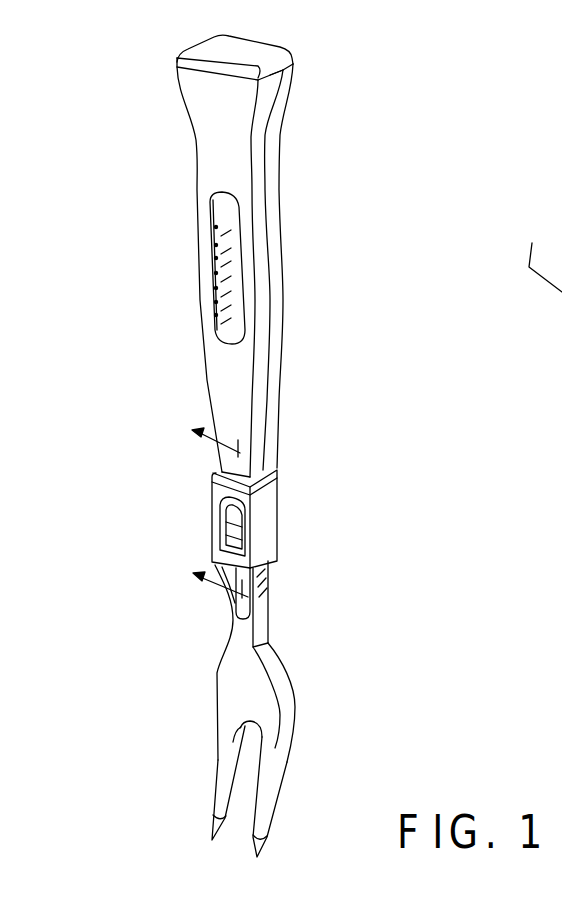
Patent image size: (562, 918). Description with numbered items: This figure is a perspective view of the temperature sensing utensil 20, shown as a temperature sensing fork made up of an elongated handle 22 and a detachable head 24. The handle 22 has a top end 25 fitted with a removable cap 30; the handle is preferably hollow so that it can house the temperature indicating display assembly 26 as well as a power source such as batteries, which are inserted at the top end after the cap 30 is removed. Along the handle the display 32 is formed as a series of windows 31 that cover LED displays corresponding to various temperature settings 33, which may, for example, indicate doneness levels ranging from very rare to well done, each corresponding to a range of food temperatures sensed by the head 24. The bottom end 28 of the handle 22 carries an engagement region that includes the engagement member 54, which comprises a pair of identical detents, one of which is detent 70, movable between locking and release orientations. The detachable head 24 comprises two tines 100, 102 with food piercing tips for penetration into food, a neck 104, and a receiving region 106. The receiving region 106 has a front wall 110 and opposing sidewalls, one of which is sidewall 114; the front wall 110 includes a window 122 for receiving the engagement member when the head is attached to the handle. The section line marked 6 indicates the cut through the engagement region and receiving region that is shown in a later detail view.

The temperature sensing utensil 20 is at (136, 86).
The handle 22 is at (283, 293).
The detachable head 24 is at (295, 693).
The top end 25 is at (287, 102).
The temperature indicating display assembly 26 is at (231, 212).
The bottom end 28 is at (273, 450).
The cap 30 is at (258, 40).
The windows 31 is at (216, 245).
The display 32 is at (222, 327).
The temperature settings 33 is at (228, 257).
The engagement member 54 is at (223, 512).
The detent 70 is at (227, 523).
The tine 100 is at (220, 798).
The tine 102 is at (267, 800).
The neck 104 is at (270, 603).
The receiving region 106 is at (277, 519).
The front wall 110 is at (220, 489).
The sidewall 114 is at (270, 543).
The window 122 is at (223, 542).
The section line 6 is at (215, 507).